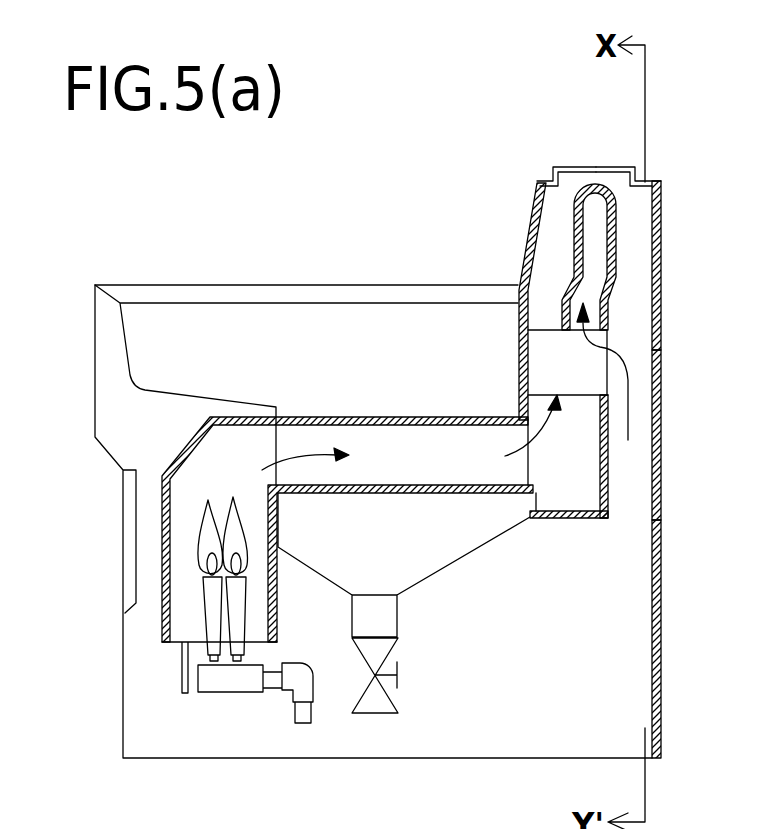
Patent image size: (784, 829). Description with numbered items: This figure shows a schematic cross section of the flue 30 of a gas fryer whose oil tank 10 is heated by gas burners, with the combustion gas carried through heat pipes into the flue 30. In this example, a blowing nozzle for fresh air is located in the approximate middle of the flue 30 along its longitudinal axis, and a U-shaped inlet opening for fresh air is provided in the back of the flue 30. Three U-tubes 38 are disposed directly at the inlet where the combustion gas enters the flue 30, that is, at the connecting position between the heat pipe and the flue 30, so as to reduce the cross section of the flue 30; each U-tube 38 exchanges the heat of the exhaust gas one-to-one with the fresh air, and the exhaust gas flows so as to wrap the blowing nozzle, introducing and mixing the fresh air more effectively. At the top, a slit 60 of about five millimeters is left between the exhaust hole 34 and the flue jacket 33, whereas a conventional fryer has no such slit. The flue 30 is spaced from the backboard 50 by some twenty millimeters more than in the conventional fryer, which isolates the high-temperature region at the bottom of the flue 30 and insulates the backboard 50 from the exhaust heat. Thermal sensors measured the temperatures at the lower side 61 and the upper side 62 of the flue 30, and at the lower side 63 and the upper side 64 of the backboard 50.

The oil tank 10 is at (365, 378).
The flue 30 is at (577, 442).
The flue jacket 33 is at (527, 238).
The exhaust hole 34 is at (600, 192).
The U-tube 38 is at (610, 342).
The backboard 50 is at (661, 653).
The slit 60 is at (558, 197).
The lower side of the flue 61 is at (610, 493).
The upper side of the flue 62 is at (661, 217).
The lower side of the backboard 63 is at (661, 492).
The upper side of the backboard 64 is at (661, 182).